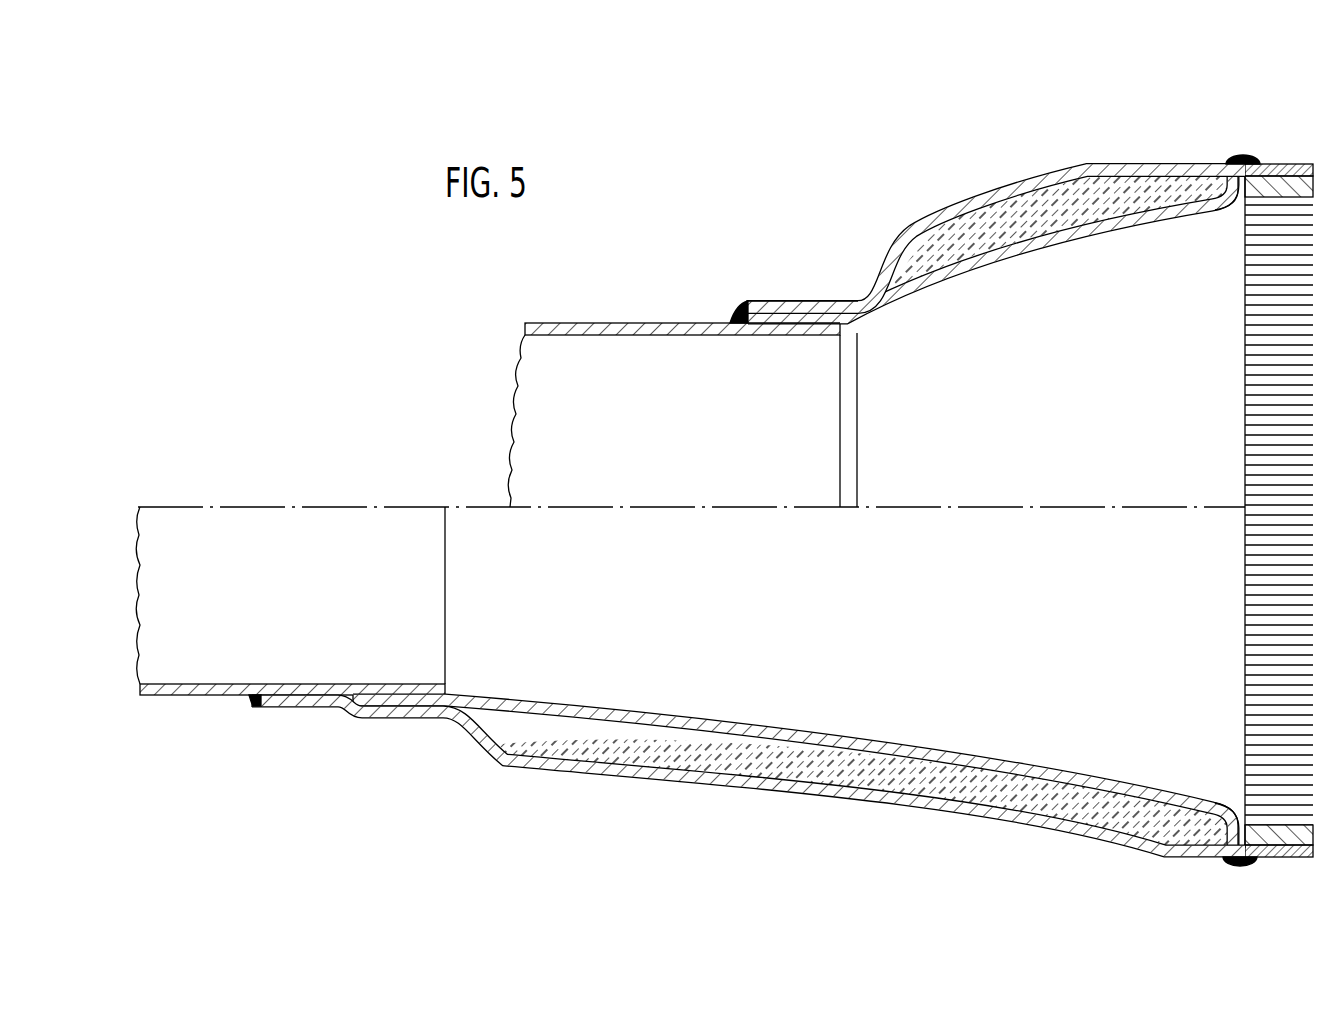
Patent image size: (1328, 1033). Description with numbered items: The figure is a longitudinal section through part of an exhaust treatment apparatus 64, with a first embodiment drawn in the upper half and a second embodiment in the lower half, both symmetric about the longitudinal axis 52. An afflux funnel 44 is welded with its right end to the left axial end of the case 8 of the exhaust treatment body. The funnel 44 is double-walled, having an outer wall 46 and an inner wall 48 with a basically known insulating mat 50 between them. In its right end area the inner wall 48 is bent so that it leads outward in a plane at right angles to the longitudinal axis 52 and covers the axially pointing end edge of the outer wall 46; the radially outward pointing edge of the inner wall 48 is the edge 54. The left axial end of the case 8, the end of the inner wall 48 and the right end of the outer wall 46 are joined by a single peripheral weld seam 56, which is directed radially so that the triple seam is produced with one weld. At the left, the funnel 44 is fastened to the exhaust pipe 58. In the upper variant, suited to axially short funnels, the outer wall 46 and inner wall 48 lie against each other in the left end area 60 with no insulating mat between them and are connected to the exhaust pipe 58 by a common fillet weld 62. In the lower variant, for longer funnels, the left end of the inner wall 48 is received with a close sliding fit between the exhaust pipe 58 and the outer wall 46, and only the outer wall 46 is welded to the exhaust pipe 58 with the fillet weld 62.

The case 8 is at (1298, 163).
The afflux funnel 44 is at (748, 488).
The outer wall 46 is at (1060, 178).
The inner wall 48 is at (1075, 237).
The insulating mat 50 is at (993, 240).
The longitudinal axis 52 is at (1074, 505).
The radially outward pointing edge of inner wall 54 is at (1225, 200).
The peripheral weld seam 56 is at (1245, 157).
The exhaust pipe 58 is at (627, 347).
The left end area of funnel 60 is at (815, 300).
The fillet weld 62 is at (740, 310).
The exhaust treatment apparatus 64 is at (1281, 104).